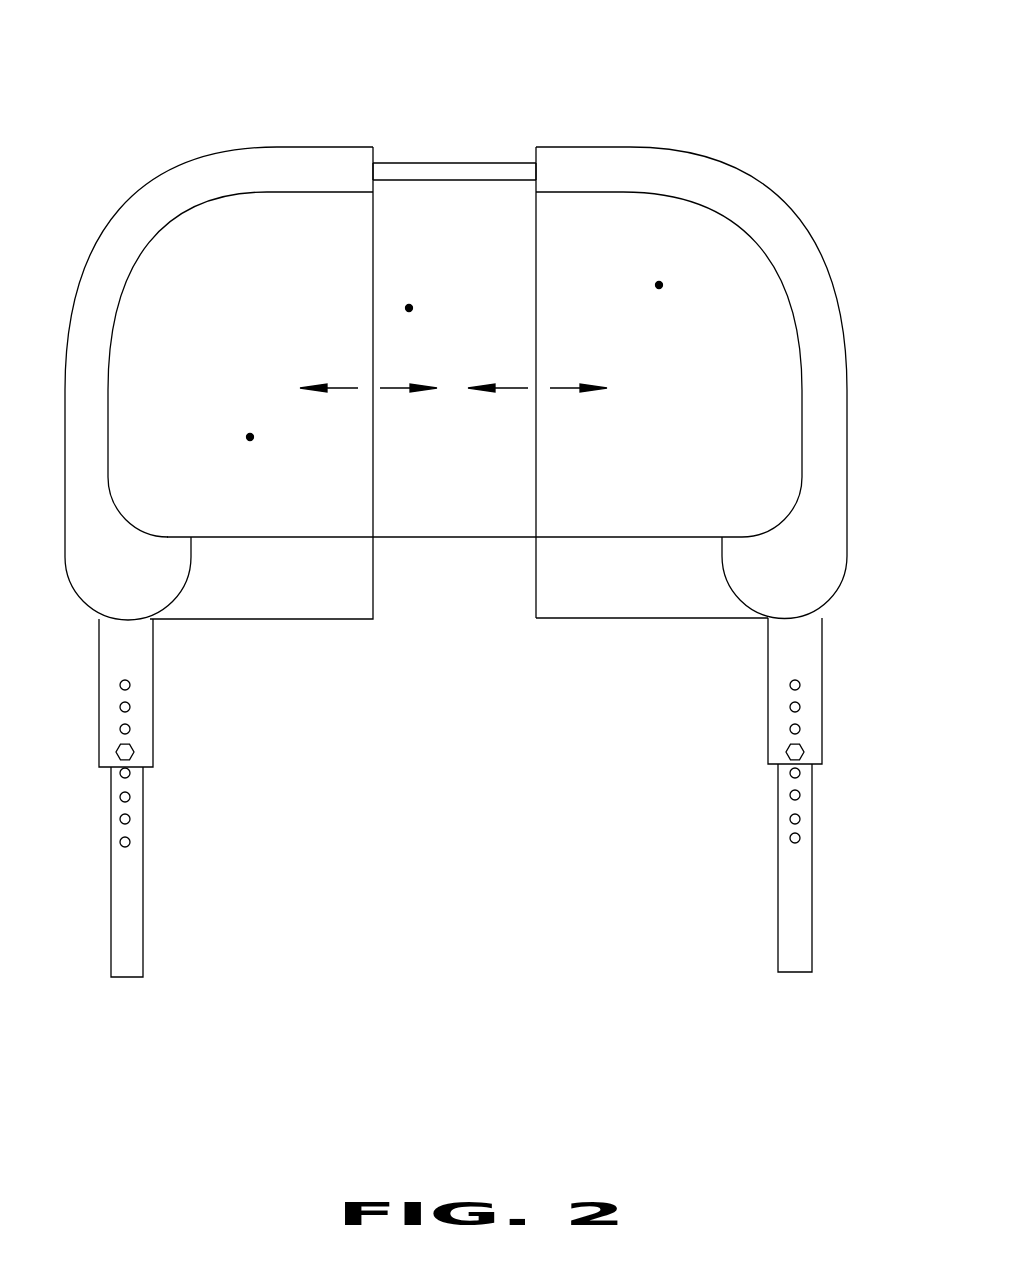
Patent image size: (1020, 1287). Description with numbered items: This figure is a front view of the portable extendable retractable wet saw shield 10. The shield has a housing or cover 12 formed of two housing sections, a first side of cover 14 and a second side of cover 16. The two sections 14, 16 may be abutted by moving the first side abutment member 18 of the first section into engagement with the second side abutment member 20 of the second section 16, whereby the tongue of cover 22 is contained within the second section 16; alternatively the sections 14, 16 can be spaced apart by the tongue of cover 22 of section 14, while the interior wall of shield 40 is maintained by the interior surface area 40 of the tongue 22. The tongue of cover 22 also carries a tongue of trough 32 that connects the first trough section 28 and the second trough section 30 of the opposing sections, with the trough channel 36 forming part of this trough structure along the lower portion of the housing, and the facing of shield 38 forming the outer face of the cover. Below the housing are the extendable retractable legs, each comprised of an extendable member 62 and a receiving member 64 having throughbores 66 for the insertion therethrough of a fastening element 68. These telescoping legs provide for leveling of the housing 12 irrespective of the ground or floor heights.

The portable extendable retractable wet saw shield 10 is at (280, 100).
The wet saw extendable retractable cover 12 is at (566, 109).
The first side of cover 14 is at (160, 190).
The second side of cover 16 is at (728, 177).
The first side abutment member 18 is at (375, 183).
The second side abutment member 20 is at (533, 183).
The tongue of cover 22 is at (450, 183).
The first trough section 28 is at (153, 530).
The second trough section 30 is at (763, 528).
The tongue of trough 32 is at (462, 532).
The trough channel 36 is at (638, 574).
The facing of shield 38 is at (783, 250).
The interior wall of shield 40 is at (255, 437).
The extendable member 62 is at (130, 910).
The receiving member 64 is at (133, 653).
The throughbore 66 is at (125, 842).
The fastening element 68 is at (130, 750).